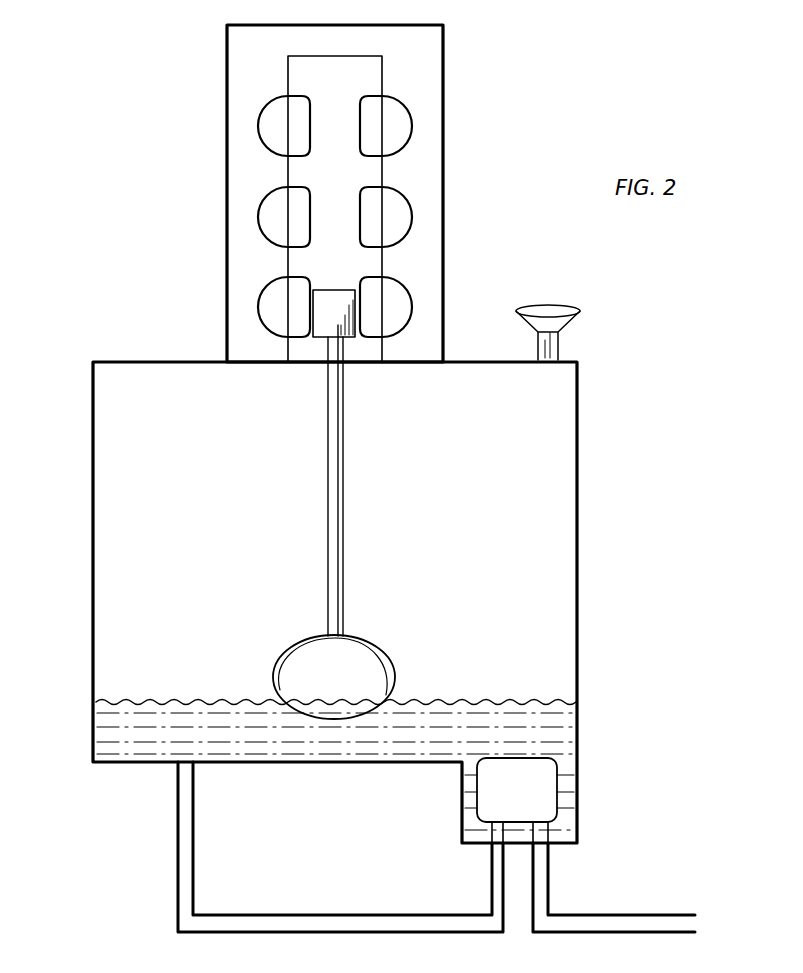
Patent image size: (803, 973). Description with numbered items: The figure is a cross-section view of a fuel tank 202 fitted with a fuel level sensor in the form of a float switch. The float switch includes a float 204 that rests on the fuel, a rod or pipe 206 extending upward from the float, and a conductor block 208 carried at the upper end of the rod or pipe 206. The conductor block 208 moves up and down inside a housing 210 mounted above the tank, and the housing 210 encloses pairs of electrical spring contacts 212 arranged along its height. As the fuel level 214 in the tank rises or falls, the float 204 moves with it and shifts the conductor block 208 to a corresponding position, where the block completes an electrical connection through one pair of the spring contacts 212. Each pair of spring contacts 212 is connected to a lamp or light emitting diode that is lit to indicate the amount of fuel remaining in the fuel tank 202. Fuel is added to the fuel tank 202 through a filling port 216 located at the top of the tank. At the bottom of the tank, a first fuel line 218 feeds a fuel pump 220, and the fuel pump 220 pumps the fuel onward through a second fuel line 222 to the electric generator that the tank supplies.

The fuel tank 202 is at (577, 422).
The float 204 is at (390, 651).
The rod or pipe 206 is at (345, 509).
The conductor block 208 is at (320, 339).
The housing 210 is at (443, 50).
The electrical spring contacts 212 is at (283, 129).
The fuel level 214 is at (136, 703).
The filling port 216 is at (560, 338).
The first fuel line 218 is at (178, 855).
The fuel pump 220 is at (543, 787).
The second fuel line 222 is at (655, 912).